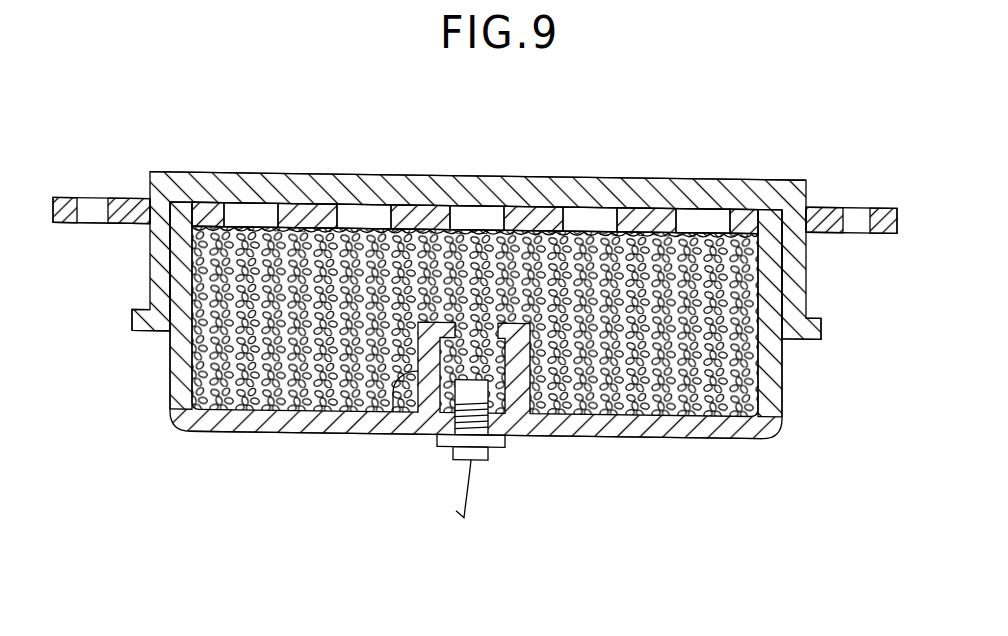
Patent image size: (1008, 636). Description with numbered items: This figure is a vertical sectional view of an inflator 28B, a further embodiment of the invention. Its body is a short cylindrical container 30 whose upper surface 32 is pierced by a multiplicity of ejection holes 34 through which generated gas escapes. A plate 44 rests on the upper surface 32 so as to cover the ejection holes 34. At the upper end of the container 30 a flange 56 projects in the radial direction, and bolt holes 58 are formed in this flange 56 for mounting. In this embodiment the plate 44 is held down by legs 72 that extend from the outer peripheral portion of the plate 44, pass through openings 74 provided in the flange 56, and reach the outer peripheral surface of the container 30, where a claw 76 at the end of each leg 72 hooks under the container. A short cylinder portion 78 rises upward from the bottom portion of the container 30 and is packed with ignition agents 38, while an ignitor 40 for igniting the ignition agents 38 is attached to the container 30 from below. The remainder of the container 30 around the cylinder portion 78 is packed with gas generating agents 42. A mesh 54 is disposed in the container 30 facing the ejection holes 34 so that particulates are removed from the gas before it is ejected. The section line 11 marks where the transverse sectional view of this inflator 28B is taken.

The bolt holes 58 is at (100, 204).
The ejection holes 34 is at (245, 215).
The plate 44 is at (304, 177).
The upper surface 32 is at (416, 214).
The openings 74 is at (826, 203).
The flange 56 is at (68, 228).
The section line 11- 11 is at (122, 262).
The legs 72 is at (150, 301).
The claw 76 is at (138, 336).
The mesh 54 is at (173, 412).
The container 30 is at (570, 431).
The gas generating agents 42 is at (660, 383).
The ignition agents 38 is at (500, 357).
The ignitor 40 is at (457, 460).
The short cylinder portion 78 is at (393, 413).
The inflator 28B is at (672, 446).